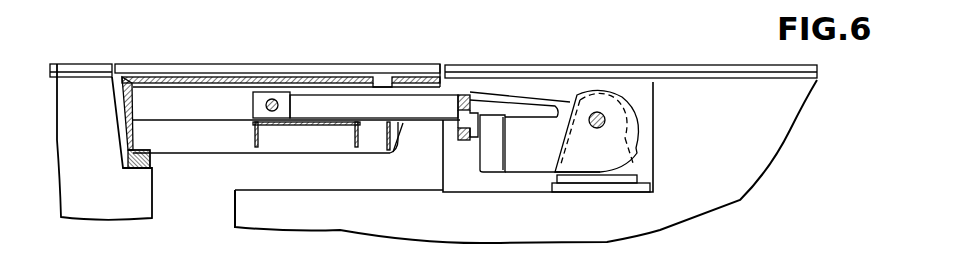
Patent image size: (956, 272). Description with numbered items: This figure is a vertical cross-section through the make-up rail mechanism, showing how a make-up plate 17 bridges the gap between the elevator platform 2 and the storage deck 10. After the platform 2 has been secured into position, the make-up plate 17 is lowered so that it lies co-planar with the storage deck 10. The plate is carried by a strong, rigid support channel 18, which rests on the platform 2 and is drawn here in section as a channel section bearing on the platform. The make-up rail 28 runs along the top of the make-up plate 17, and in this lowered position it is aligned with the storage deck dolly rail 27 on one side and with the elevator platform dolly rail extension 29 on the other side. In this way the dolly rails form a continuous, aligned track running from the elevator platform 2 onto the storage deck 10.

The platform 2 is at (89, 192).
The storage deck 10 is at (708, 163).
The make-up plate 17 is at (373, 82).
The support channel 18 is at (130, 110).
The storage deck dolly rail 27 is at (548, 63).
The make-up rail 28 is at (318, 63).
The elevator platform dolly rail extension 29 is at (103, 67).